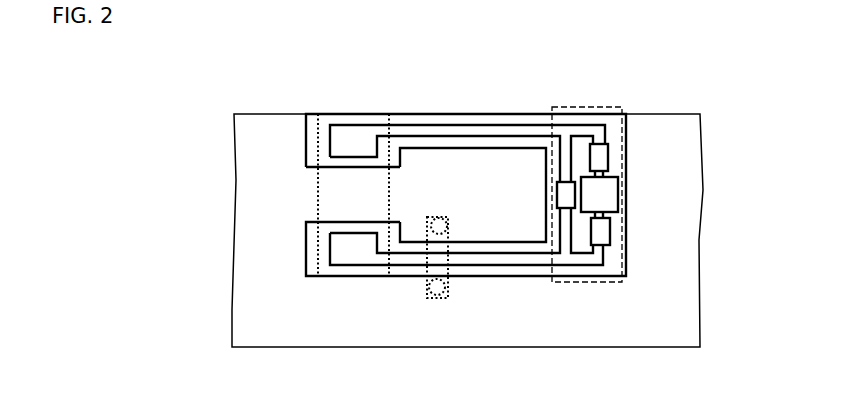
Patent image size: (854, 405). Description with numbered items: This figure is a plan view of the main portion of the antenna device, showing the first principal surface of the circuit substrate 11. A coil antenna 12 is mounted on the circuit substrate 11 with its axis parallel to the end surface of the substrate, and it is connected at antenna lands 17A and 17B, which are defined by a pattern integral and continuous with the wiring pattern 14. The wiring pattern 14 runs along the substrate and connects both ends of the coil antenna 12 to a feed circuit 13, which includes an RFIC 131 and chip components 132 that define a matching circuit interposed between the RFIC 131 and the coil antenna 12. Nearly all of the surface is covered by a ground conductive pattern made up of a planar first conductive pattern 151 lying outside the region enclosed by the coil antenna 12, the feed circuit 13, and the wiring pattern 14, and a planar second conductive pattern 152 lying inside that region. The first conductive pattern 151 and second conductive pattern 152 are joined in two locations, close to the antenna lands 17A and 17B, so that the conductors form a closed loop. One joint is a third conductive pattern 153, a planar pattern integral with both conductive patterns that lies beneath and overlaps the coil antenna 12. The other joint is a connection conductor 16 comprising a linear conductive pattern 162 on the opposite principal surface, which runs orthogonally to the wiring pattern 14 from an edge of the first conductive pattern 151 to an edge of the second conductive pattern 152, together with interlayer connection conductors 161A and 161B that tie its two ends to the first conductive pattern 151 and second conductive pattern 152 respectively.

The first conductive pattern 151 is at (273, 136).
The circuit substrate 11 is at (318, 114).
The antenna land 17A is at (355, 135).
The coil antenna 12 is at (392, 118).
The second conductive pattern 152 is at (471, 163).
The wiring pattern 14 is at (513, 130).
The feed circuit 13 is at (622, 107).
The chip components 132 is at (602, 156).
The RFIC 131 is at (601, 195).
The third conductive pattern 153 is at (338, 193).
The antenna land 17B is at (357, 255).
The conductive pattern 162 is at (430, 285).
The connection conductor 16 is at (435, 311).
The interlayer connection conductor 161A is at (440, 230).
The interlayer connection conductor 161B is at (442, 226).